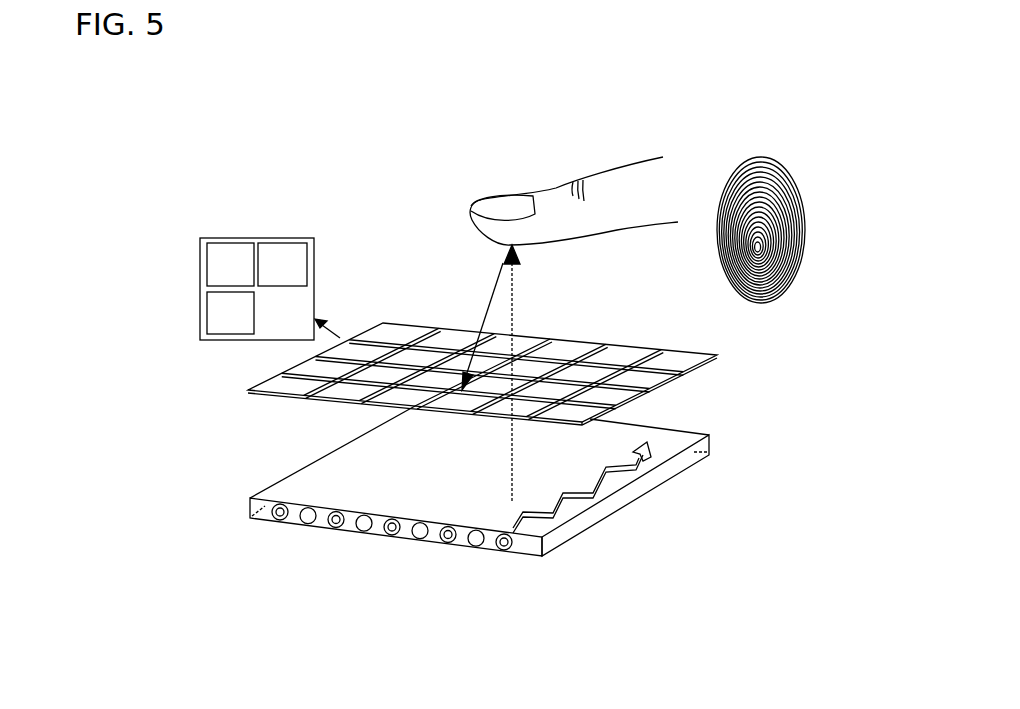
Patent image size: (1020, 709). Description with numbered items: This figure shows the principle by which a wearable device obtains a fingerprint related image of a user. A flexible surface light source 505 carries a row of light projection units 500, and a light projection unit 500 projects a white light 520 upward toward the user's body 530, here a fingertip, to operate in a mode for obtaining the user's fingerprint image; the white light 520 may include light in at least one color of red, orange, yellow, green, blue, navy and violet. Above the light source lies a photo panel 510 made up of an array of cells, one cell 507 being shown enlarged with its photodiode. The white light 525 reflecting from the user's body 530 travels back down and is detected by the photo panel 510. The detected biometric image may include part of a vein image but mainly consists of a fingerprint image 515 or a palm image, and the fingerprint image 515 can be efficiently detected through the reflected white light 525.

The light projection unit 500 is at (510, 552).
The flexible surface light source 505 is at (623, 503).
The cell 507 is at (200, 290).
The photo panel 510 is at (705, 367).
The fingerprint image 515 is at (797, 268).
The white light 520 is at (514, 287).
The reflected white light 525 is at (492, 297).
The user's body 530 is at (558, 188).